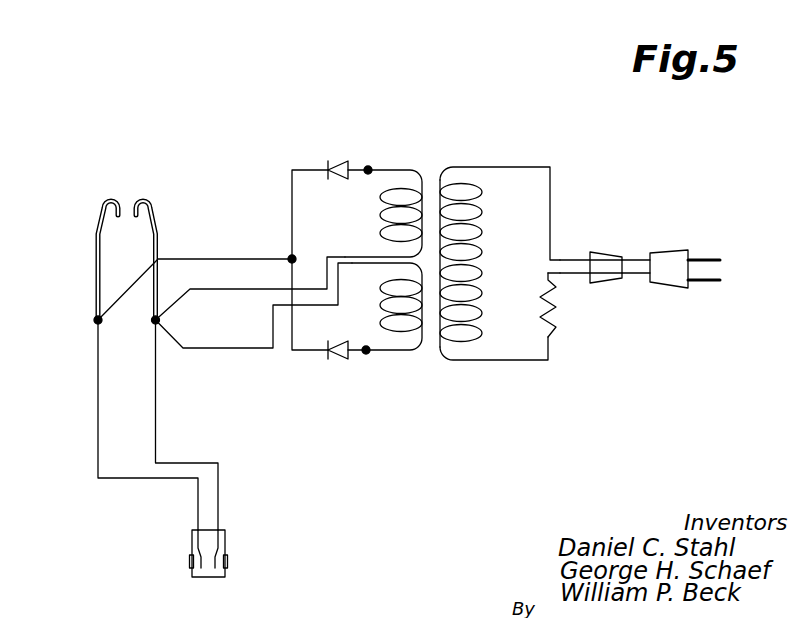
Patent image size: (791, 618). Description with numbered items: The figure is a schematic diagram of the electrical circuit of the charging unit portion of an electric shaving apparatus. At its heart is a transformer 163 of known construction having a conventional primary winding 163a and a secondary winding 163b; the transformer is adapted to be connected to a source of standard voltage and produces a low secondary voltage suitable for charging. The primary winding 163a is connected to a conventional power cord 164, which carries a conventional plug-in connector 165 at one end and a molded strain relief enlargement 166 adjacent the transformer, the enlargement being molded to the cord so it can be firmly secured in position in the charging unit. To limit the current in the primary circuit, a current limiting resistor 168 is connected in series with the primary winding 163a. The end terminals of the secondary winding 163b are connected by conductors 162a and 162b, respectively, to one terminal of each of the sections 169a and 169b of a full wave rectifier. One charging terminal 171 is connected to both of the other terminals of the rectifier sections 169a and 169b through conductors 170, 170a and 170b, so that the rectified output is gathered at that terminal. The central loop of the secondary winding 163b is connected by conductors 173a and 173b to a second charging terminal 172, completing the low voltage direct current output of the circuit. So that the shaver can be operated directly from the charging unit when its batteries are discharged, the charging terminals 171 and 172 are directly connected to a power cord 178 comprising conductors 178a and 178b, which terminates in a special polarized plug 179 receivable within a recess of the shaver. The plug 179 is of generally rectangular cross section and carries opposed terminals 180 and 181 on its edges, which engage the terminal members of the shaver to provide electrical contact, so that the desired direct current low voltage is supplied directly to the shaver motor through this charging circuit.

The conductor 162a is at (363, 167).
The conductor 162b is at (367, 353).
The transformer 163 is at (430, 177).
The primary winding 163a is at (480, 193).
The secondary winding 163b is at (381, 216).
The power cord 164 is at (640, 265).
The plug-in connector 165 is at (672, 253).
The strain relief enlargement 166 is at (606, 252).
The current limiting resistor 168 is at (548, 301).
The rectifier section 169a is at (342, 161).
The rectifier section 169b is at (342, 360).
The conductor 170 is at (212, 246).
The conductor 170a is at (292, 180).
The conductor 170b is at (291, 341).
The charging terminal 171 is at (103, 208).
The charging terminal 172 is at (156, 190).
The conductor 173a is at (257, 287).
The conductor 173b is at (258, 347).
The power cord 178 is at (218, 488).
The conductor 178a is at (98, 366).
The conductor 178b is at (156, 381).
The polarized plug 179 is at (207, 571).
The terminal 180 is at (189, 558).
The terminal 181 is at (228, 558).